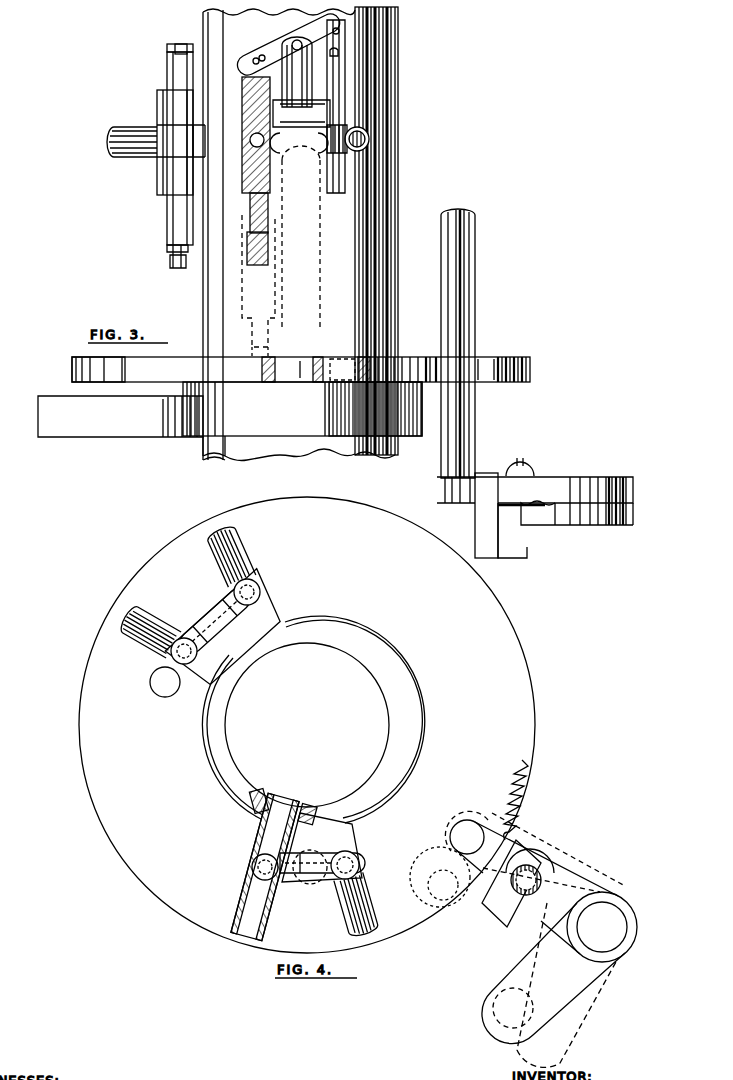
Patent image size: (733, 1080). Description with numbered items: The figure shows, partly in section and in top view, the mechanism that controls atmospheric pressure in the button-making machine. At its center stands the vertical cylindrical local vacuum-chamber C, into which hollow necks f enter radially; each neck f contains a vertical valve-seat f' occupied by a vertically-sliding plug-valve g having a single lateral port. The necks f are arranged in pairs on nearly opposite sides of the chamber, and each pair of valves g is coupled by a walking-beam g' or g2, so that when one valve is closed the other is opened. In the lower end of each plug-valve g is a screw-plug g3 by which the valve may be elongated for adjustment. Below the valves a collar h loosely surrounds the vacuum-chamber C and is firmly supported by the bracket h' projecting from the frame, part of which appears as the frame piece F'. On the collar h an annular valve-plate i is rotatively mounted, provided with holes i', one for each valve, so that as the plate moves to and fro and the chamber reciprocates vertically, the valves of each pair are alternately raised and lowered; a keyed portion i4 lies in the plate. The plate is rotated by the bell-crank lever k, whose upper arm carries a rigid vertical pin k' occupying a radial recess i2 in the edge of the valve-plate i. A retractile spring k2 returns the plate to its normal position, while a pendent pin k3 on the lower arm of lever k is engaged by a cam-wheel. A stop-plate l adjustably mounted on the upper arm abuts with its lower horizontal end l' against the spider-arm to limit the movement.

In FIG. 3, the local vacuum-chamber C is at (320, 232).
In FIG. 4, the local vacuum-chamber C is at (307, 725).
In FIG. 3, the frame bar F' is at (109, 370).
In FIG. 3, the hollow neck f is at (232, 142).
In FIG. 4, the hollow neck f is at (249, 732).
In FIG. 3, the vertical valve-seat f' is at (243, 142).
In FIG. 4, the vertical valve-seat f' is at (275, 723).
In FIG. 3, the plug-valve g is at (208, 144).
In FIG. 4, the plug-valve g is at (263, 737).
In FIG. 3, the walking-beam g' is at (291, 103).
In FIG. 4, the walking-beam g' is at (322, 852).
In FIG. 3, the walking-beam g2 is at (193, 58).
In FIG. 4, the walking-beam g2 is at (215, 621).
In FIG. 3, the screw-plug g3 is at (217, 258).
In FIG. 3, the collar h is at (302, 421).
In FIG. 4, the collar h is at (313, 719).
In FIG. 3, the bracket h' is at (120, 416).
In FIG. 3, the annular valve-plate i is at (301, 359).
In FIG. 4, the annular valve-plate i is at (307, 725).
In FIG. 3, the hole i' is at (297, 372).
In FIG. 4, the hole i' is at (238, 781).
In FIG. 3, the radial recess i2 is at (486, 371).
In FIG. 4, the radial recess i2 is at (517, 870).
In FIG. 3, the slide block key i4 is at (342, 371).
In FIG. 3, the bell-crank lever k is at (535, 491).
In FIG. 4, the bell-crank lever k is at (546, 944).
In FIG. 3, the vertical pin k' is at (467, 343).
In FIG. 4, the vertical pin k' is at (466, 832).
In FIG. 4, the retractile spring k2 is at (535, 800).
In FIG. 4, the pendent pin k3 is at (513, 1008).
In FIG. 3, the stop-plate l is at (486, 515).
In FIG. 3, the lower horizontal end l' is at (521, 530).